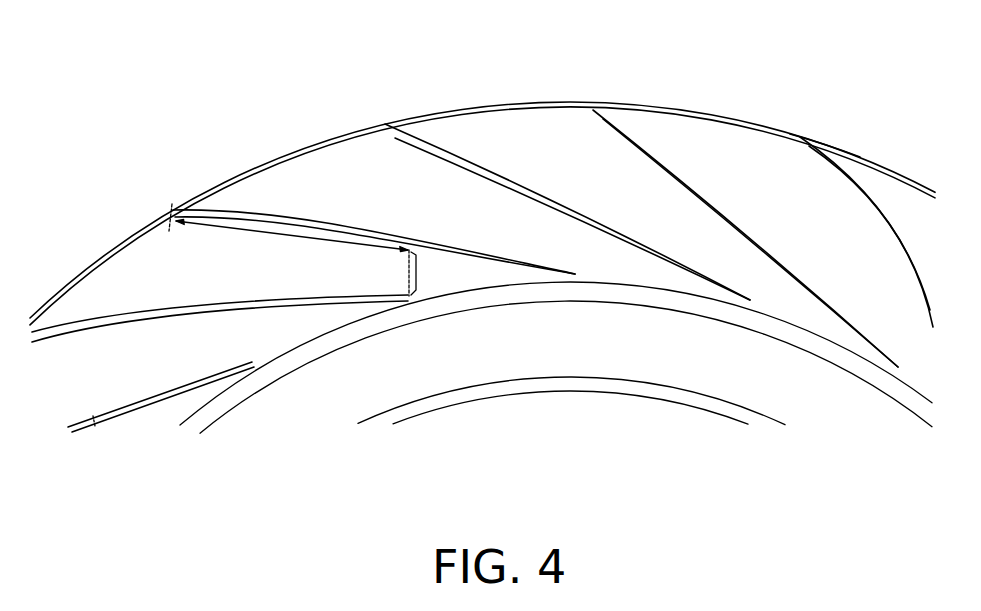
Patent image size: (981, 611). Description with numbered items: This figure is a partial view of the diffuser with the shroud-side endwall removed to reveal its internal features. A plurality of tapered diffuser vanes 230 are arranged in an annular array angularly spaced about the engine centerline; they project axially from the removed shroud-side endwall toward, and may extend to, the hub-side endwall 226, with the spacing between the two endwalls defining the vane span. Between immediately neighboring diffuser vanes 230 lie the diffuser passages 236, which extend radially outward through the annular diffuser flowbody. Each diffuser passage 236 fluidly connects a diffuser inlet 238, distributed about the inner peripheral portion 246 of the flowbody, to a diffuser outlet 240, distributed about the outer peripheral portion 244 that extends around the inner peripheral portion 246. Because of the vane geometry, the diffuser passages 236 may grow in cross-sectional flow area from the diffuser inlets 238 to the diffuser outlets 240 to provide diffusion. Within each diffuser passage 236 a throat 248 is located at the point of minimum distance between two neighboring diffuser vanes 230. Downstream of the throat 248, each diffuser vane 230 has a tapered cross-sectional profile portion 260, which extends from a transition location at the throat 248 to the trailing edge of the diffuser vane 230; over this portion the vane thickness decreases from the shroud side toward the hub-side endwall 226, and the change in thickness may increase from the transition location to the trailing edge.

The hub-side endwall 226 is at (542, 363).
The diffuser vane 230 is at (270, 210).
The diffuser passage 236 is at (238, 282).
The diffuser inlet 238 is at (808, 317).
The diffuser outlet 240 is at (492, 107).
The outer peripheral portion 244 is at (830, 147).
The inner peripheral portion 246 is at (672, 403).
The throat 248 is at (437, 273).
The tapered cross-sectional profile portion 260 is at (288, 235).